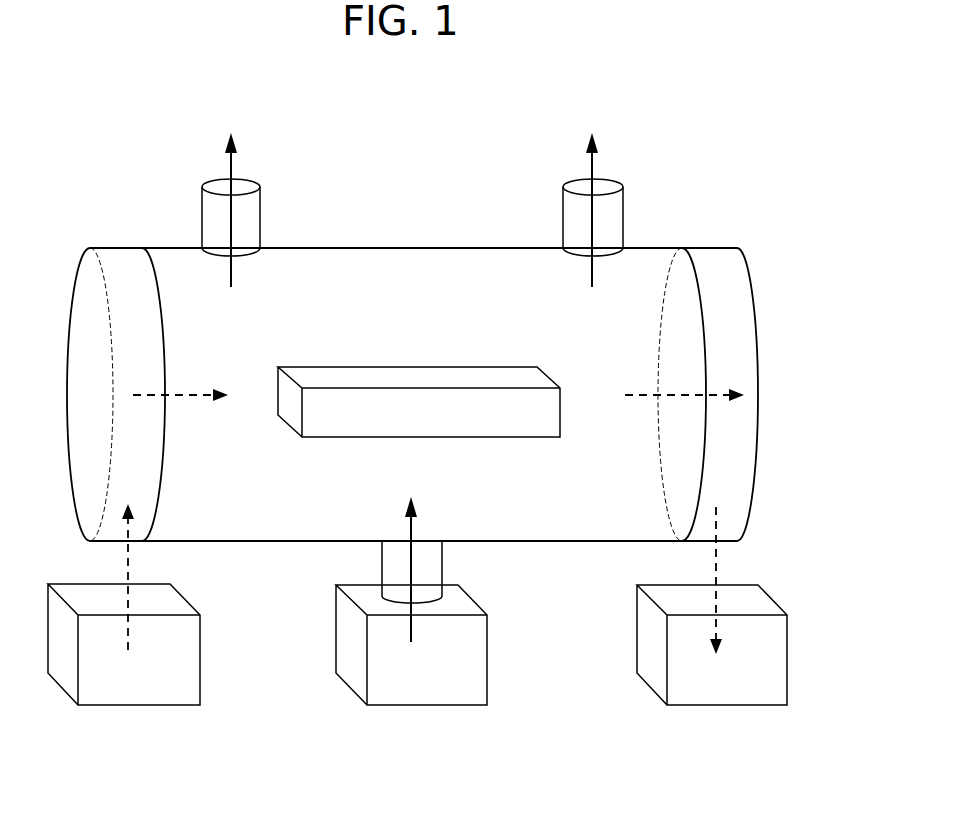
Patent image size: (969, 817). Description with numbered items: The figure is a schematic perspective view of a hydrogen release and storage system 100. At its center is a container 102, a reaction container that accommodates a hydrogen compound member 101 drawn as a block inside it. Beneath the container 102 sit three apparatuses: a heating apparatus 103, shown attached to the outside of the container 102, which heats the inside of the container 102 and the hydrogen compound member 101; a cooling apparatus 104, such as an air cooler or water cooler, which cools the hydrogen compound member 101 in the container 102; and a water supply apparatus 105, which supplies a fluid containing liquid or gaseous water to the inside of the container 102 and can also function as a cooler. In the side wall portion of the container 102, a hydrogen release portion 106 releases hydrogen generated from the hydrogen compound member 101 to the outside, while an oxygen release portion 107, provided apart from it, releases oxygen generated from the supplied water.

The hydrogen release and storage system 100 is at (757, 148).
The hydrogen compound member 101 is at (418, 377).
The container 102 is at (647, 248).
The heating apparatus 103 is at (145, 685).
The cooling apparatus 104 is at (720, 683).
The water supply apparatus 105 is at (430, 687).
The hydrogen release portion 106 is at (253, 210).
The oxygen release portion 107 is at (617, 203).